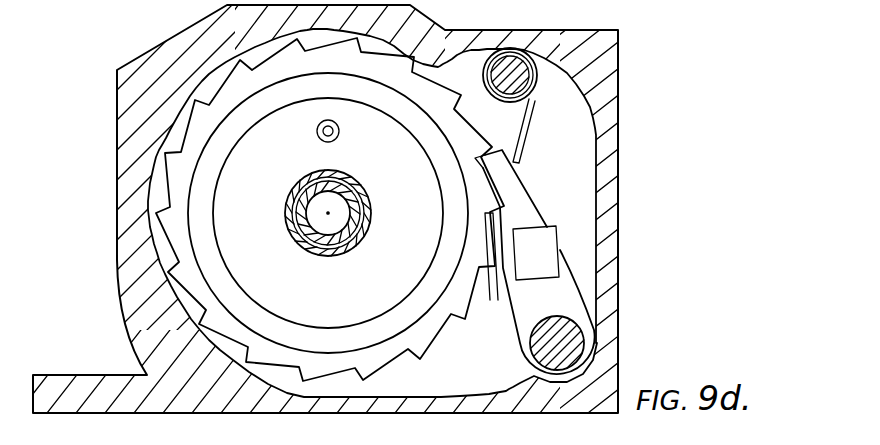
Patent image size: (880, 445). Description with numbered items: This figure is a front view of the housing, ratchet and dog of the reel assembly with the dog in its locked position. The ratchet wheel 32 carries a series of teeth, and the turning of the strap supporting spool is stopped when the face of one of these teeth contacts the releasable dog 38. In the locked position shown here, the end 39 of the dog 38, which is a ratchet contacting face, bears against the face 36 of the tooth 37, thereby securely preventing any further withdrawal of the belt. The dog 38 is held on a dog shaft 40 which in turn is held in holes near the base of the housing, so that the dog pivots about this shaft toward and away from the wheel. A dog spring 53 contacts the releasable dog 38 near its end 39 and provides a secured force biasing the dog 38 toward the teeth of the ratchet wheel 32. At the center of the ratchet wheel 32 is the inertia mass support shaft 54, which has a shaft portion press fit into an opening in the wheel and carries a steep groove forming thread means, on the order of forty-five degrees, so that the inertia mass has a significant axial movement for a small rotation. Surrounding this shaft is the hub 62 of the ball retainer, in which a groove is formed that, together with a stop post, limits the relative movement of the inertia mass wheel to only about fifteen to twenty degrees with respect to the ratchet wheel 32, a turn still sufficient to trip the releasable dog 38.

The ratchet wheel 32 is at (439, 66).
The face 36 is at (482, 162).
The tooth 37 is at (460, 137).
The releasable dog 38 is at (533, 203).
The end 39 is at (492, 152).
The dog shaft 40 is at (578, 343).
The dog spring 53 is at (528, 104).
The inertia mass support shaft 54 is at (302, 200).
The hub 62 is at (347, 178).